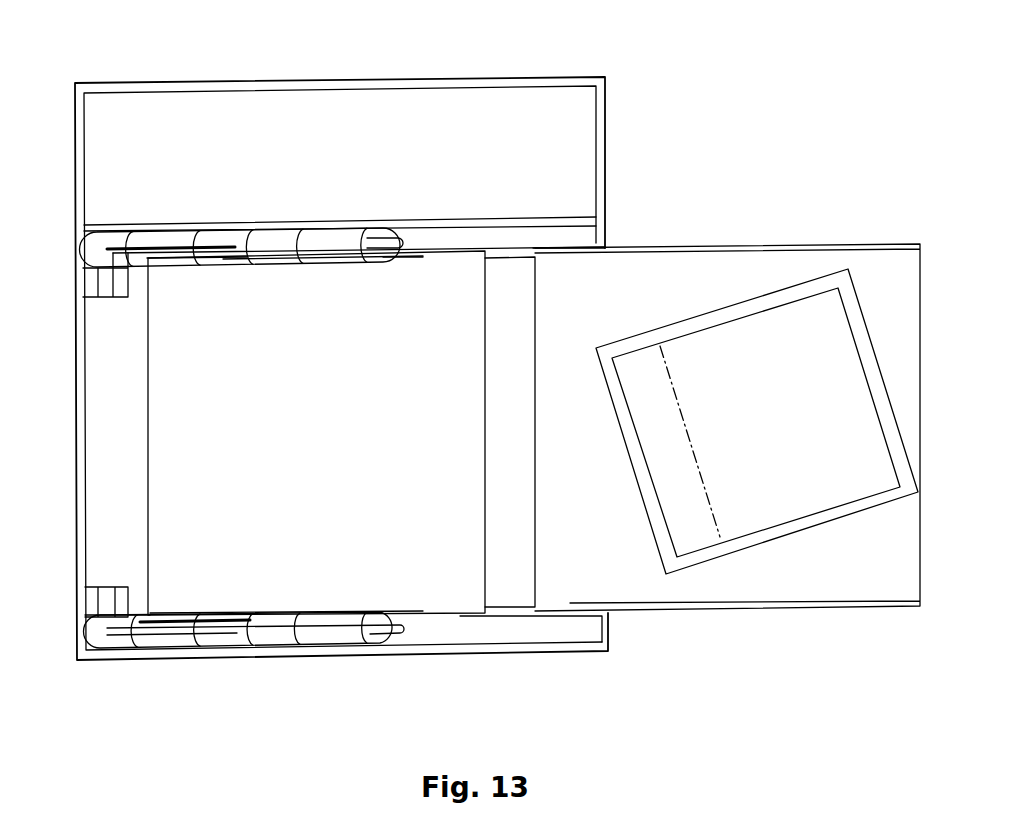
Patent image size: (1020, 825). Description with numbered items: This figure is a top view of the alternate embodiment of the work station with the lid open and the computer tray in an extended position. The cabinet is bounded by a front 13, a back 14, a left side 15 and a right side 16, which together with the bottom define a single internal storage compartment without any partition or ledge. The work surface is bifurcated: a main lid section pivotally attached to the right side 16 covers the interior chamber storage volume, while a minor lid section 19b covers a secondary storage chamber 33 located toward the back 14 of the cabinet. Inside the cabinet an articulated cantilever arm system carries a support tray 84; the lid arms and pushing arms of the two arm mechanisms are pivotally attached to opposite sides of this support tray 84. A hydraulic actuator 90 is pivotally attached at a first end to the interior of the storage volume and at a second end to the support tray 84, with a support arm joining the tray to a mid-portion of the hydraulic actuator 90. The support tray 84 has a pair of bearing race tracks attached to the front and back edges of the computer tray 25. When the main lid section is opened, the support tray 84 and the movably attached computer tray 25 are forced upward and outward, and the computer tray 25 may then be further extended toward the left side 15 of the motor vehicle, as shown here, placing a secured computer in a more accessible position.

The front 13 is at (363, 656).
The back 14 is at (360, 80).
The left side 15 is at (603, 228).
The right side 16 is at (77, 397).
The minor lid section 19b is at (520, 125).
The computer tray 25 is at (687, 592).
The secondary storage chamber 33 is at (629, 121).
The support tray 84 is at (432, 587).
The hydraulic actuator 90 is at (271, 640).